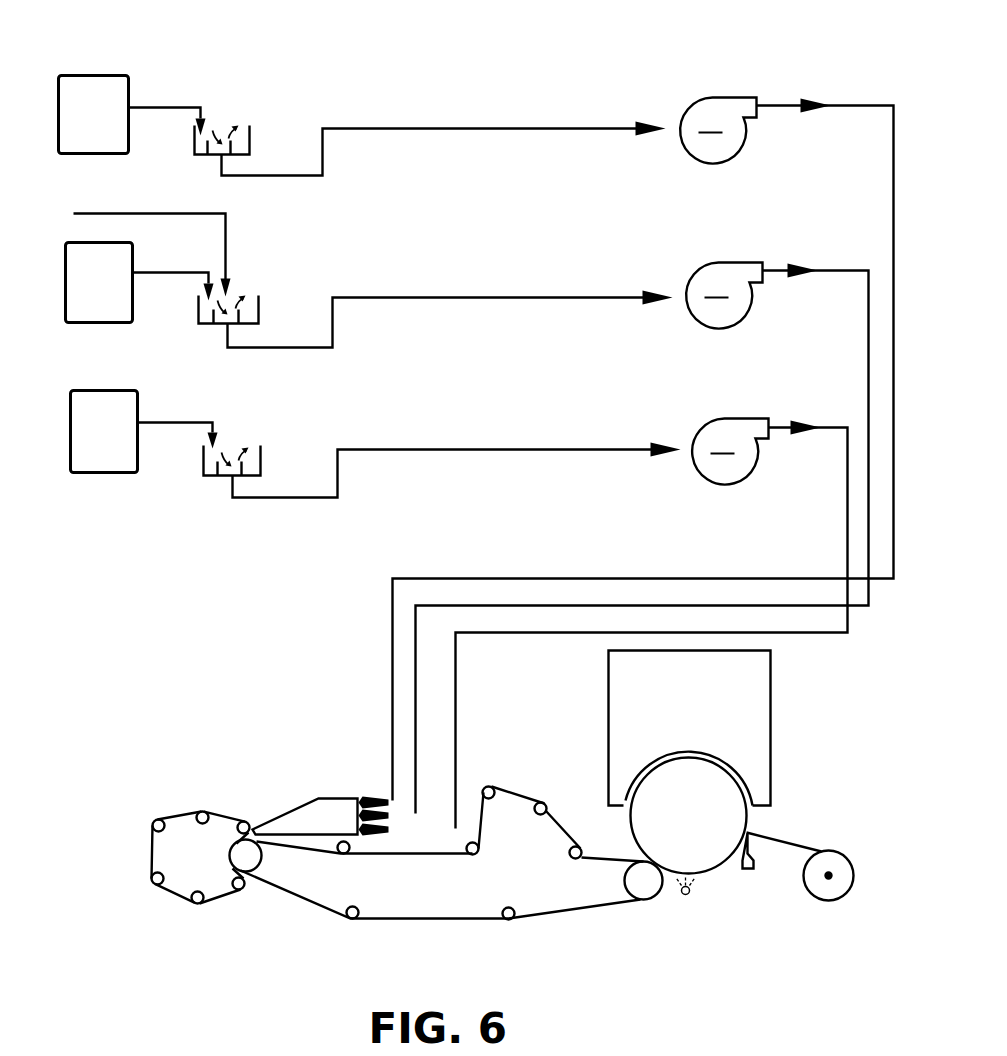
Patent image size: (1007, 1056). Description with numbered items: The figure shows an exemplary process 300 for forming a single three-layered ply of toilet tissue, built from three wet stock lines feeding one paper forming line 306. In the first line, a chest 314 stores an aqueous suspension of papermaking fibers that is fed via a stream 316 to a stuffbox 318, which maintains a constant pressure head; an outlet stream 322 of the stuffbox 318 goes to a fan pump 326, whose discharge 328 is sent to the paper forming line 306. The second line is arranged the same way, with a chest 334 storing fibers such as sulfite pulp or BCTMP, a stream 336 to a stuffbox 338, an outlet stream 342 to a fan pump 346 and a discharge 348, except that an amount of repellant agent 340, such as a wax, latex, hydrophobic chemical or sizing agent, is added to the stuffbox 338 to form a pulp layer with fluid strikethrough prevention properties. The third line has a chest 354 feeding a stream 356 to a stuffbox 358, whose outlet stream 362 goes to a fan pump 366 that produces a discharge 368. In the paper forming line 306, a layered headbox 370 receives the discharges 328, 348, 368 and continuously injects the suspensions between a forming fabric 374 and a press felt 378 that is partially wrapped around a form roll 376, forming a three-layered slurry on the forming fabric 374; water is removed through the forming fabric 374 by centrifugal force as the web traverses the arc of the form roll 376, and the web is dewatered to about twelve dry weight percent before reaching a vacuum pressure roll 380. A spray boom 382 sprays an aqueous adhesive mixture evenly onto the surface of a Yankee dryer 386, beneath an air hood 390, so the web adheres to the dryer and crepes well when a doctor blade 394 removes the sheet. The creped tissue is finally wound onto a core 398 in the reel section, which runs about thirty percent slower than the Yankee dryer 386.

The process 300 is at (130, 43).
The paper forming line 306 is at (145, 913).
The chest 314 is at (117, 124).
The stream 316 is at (166, 106).
The stuffbox 318 is at (194, 144).
The outlet stream 322 is at (276, 177).
The fan pump 326 is at (717, 164).
The discharge 328 is at (784, 104).
The chest 334 is at (118, 294).
The stream 336 is at (152, 272).
The stuffbox 338 is at (198, 312).
The repellant agent 340 is at (226, 250).
The outlet stream 342 is at (292, 348).
The fan pump 346 is at (708, 263).
The discharge 348 is at (780, 268).
The chest 354 is at (122, 438).
The stream 356 is at (168, 422).
The stuffbox 358 is at (203, 465).
The outlet stream 362 is at (296, 500).
The fan pump 366 is at (720, 418).
The discharge 368 is at (785, 425).
The layered headbox 370 is at (340, 797).
The forming fabric 374 is at (228, 813).
The form roll 376 is at (262, 858).
The press felt 378 is at (297, 900).
The vacuum pressure roll 380 is at (623, 880).
The spray boom 382 is at (685, 895).
The Yankee dryer 386 is at (708, 826).
The air hood 390 is at (708, 701).
The doctor blade 394 is at (746, 870).
The core 398 is at (829, 874).